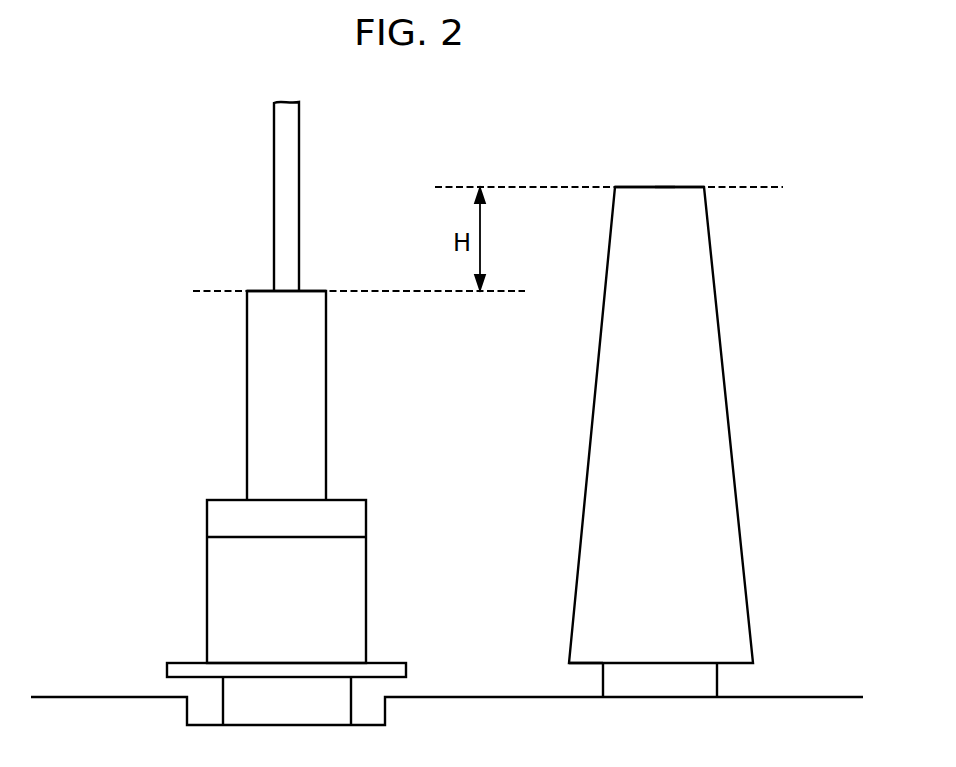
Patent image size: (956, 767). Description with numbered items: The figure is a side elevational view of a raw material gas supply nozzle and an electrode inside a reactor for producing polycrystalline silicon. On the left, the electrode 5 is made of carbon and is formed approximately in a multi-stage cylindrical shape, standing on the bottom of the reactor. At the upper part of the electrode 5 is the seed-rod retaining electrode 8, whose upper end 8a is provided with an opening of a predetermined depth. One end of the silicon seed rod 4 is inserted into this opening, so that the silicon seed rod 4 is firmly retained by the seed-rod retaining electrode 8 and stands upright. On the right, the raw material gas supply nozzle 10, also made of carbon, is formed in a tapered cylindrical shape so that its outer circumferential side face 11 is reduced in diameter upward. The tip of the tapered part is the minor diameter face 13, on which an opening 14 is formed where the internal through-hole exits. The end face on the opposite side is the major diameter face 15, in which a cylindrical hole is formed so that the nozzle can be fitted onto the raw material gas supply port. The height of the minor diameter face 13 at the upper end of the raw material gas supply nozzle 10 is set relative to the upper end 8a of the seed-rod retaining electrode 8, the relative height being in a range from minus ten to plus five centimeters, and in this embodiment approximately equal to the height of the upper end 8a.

The silicon seed rod 4 is at (299, 162).
The electrode 5 is at (163, 318).
The seed-rod retaining electrode 8 is at (327, 392).
The upper end 8a is at (313, 290).
The raw material gas supply nozzle 10 is at (748, 349).
The outer circumferential side face 11 is at (733, 446).
The minor diameter face 13 is at (688, 186).
The opening 14 is at (665, 187).
The major diameter face 15 is at (577, 664).